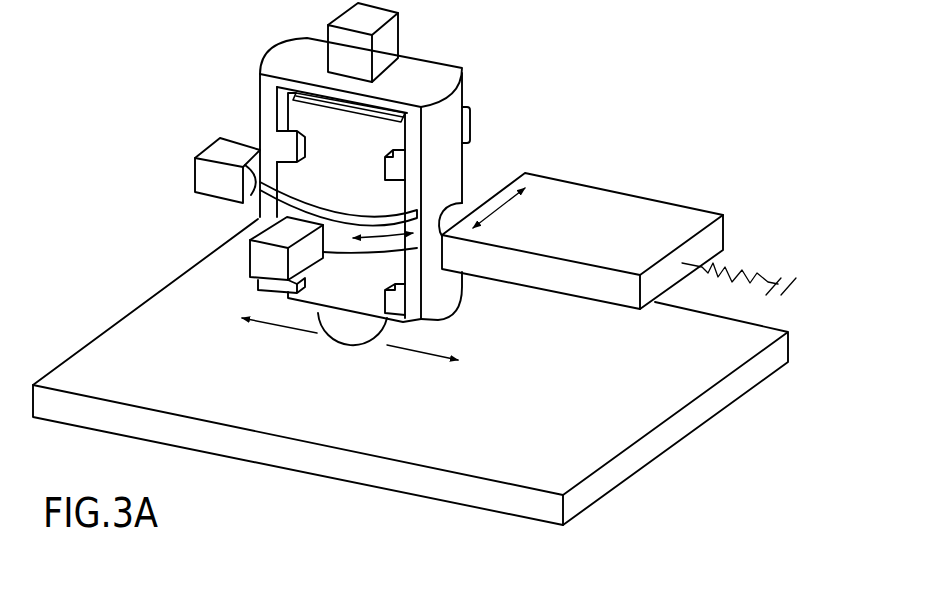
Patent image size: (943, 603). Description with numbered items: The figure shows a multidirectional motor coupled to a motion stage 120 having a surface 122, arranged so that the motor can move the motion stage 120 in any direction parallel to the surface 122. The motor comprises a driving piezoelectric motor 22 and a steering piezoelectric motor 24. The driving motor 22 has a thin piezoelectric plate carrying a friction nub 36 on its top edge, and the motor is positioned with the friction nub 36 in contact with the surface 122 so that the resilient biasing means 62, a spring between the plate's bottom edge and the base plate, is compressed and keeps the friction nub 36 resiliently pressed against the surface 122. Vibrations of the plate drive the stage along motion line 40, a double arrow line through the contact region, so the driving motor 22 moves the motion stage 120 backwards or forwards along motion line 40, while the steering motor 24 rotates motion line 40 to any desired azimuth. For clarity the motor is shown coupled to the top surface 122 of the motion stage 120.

The driving piezoelectric motor 22 is at (305, 314).
The steering piezoelectric motor 24 is at (601, 160).
The friction nub 36 is at (347, 332).
The motion line 40 is at (410, 347).
The resilient biasing means 62 is at (330, 103).
The motion stage 120 is at (684, 463).
The surface 122 is at (673, 388).